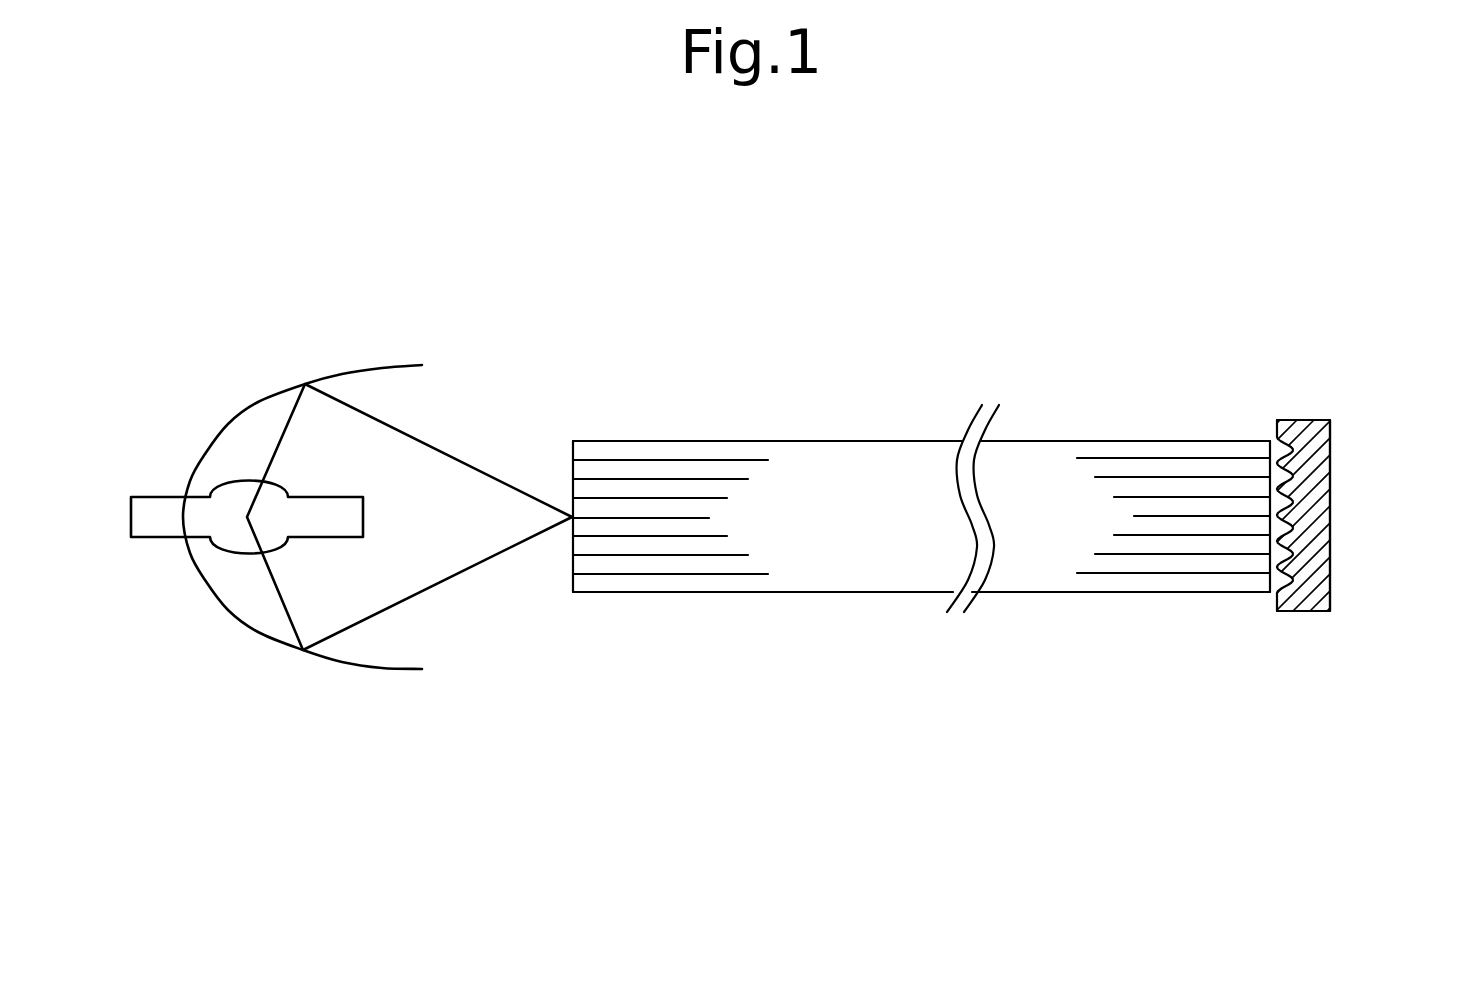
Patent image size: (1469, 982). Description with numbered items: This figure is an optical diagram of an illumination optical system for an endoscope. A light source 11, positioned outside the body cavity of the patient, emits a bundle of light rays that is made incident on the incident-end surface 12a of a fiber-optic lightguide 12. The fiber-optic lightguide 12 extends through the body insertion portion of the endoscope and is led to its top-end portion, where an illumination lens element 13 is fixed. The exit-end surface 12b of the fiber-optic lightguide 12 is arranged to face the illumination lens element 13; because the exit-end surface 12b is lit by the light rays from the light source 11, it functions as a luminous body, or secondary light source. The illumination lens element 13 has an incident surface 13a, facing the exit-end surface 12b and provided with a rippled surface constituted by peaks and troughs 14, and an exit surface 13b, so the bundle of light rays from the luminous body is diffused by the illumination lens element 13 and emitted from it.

The light source 11 is at (320, 359).
The fiber-optic lightguide 12 is at (1070, 408).
The incident-end surface 12a is at (573, 568).
The exit-end surface 12b is at (1270, 437).
The illumination lens element 13 is at (1279, 508).
The incident surface 13a is at (1225, 561).
The peaks and troughs 14 is at (1280, 552).
The exit surface 13b is at (1330, 480).